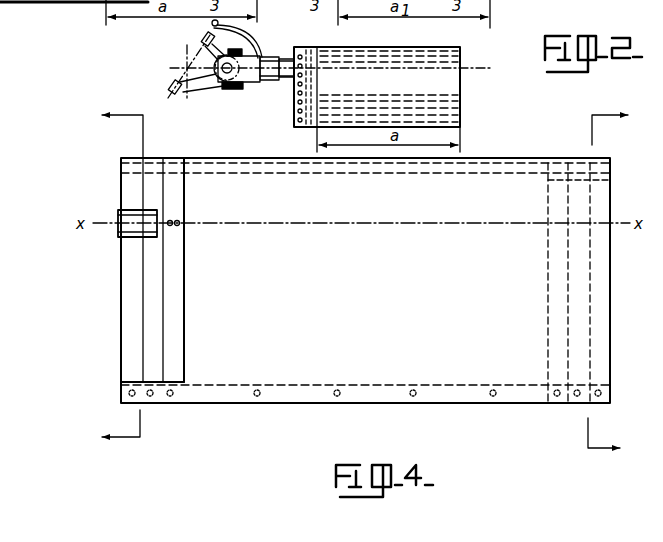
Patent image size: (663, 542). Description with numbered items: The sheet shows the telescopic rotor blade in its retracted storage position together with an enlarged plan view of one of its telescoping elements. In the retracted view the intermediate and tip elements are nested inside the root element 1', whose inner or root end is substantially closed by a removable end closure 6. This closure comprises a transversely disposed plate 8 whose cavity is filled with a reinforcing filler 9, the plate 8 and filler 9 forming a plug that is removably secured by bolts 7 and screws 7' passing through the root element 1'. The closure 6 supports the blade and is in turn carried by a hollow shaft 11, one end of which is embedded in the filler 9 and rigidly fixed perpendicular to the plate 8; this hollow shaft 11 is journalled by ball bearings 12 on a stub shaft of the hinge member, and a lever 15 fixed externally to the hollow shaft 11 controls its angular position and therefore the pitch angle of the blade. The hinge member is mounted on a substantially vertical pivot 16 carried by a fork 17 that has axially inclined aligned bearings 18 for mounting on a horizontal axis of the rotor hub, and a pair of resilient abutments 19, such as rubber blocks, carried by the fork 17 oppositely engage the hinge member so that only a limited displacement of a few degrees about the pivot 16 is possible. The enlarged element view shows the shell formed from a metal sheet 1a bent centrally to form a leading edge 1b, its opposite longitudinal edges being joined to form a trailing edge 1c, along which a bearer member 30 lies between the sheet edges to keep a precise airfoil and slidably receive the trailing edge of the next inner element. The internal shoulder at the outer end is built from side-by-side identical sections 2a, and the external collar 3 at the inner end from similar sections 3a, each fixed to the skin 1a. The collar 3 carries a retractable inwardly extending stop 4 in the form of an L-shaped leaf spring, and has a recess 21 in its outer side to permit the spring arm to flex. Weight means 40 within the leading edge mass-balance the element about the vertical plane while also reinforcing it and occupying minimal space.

In FIG. 2, the root element 1' is at (236, 65).
In FIG. 2, the external collar 3 is at (100, 3).
In FIG. 2, the lever 15 is at (255, 42).
In FIG. 2, the bearings 18 is at (198, 37).
In FIG. 2, the fork 17 is at (179, 91).
In FIG. 2, the pivot 16 is at (232, 80).
In FIG. 2, the resilient abutments 19 is at (229, 78).
In FIG. 2, the hollow shaft 11 is at (282, 80).
In FIG. 4, the hollow shaft 11 is at (121, 276).
In FIG. 2, the bolts 7 is at (291, 100).
In FIG. 2, the plate 8 is at (308, 115).
In FIG. 2, the end closure 6 is at (296, 108).
In FIG. 2, the screws 7' is at (329, 38).
In FIG. 2, the reinforcing filler 9 is at (303, 88).
In FIG. 4, the weight means 40 is at (473, 170).
In FIG. 4, the bearer member 30 is at (382, 392).
In FIG. 4, the collar sections 3a is at (132, 185).
In FIG. 4, the retractable stop 4 is at (121, 217).
In FIG. 4, the recess 21 is at (122, 237).
In FIG. 4, the shoulder sections 2a is at (623, 163).
In FIG. 4, the leading edge 1b is at (533, 162).
In FIG. 4, the metal sheet 1a is at (305, 370).
In FIG. 4, the trailing edge 1c is at (468, 403).
In FIG. 4, the journal ball bearings 12 is at (605, 281).